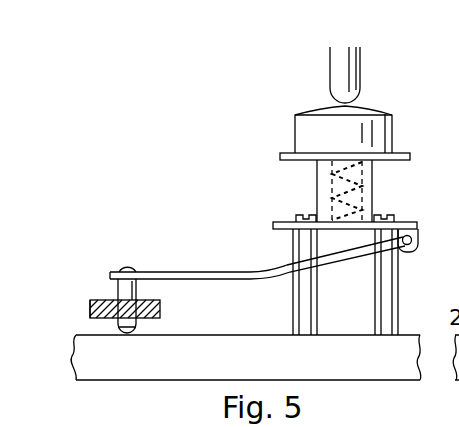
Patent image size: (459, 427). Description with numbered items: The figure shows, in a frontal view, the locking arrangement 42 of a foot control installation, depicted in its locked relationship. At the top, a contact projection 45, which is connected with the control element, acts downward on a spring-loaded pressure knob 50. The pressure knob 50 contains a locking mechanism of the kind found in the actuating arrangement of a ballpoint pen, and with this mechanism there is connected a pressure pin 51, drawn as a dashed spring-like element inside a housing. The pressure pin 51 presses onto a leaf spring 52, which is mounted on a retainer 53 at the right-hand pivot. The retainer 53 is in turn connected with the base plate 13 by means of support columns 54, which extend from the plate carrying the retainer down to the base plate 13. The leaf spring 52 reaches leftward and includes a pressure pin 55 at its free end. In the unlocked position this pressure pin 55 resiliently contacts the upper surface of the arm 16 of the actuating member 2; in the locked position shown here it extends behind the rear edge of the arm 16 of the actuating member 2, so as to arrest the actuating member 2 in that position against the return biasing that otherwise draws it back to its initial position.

The actuating member 2 is at (75, 302).
The base plate 13 is at (230, 337).
The arm 16 is at (161, 308).
The locking arrangement 42 is at (283, 118).
The contact projection 45 is at (360, 72).
The pressure knob 50 is at (392, 131).
The pressure pin 51 is at (357, 241).
The leaf spring 52 is at (247, 271).
The retainer 53 is at (413, 238).
The support columns 54 is at (386, 298).
The pressure pin 55 is at (117, 292).